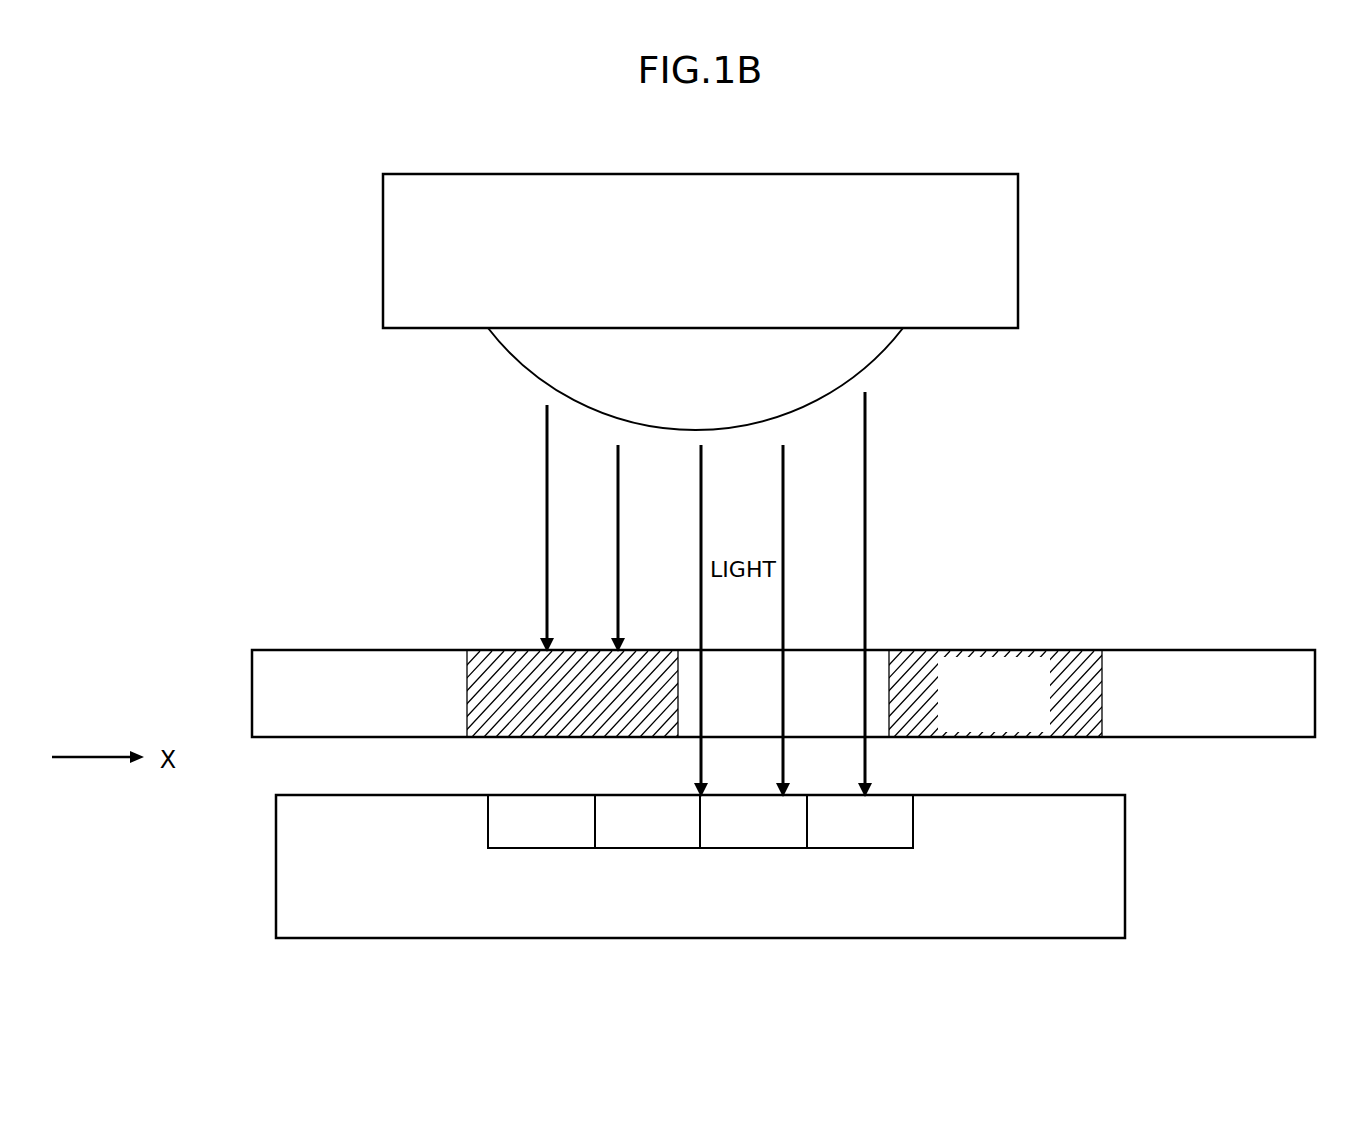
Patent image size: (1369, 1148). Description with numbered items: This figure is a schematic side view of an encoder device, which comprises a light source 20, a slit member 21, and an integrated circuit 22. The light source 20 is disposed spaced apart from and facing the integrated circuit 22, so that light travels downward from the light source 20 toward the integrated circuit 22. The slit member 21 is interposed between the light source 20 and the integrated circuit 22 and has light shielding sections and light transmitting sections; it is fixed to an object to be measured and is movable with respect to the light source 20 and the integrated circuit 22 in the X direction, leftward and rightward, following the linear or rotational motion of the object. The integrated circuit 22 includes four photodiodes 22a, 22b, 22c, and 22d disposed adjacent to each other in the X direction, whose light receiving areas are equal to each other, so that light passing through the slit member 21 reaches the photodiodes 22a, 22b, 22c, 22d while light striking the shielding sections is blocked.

The light source 20 is at (1018, 290).
The slit member 21 is at (1315, 690).
The integrated circuit 22 is at (1125, 885).
The photodiode 22a is at (520, 795).
The photodiode 22b is at (665, 795).
The photodiode 22c is at (740, 795).
The photodiode 22d is at (890, 795).